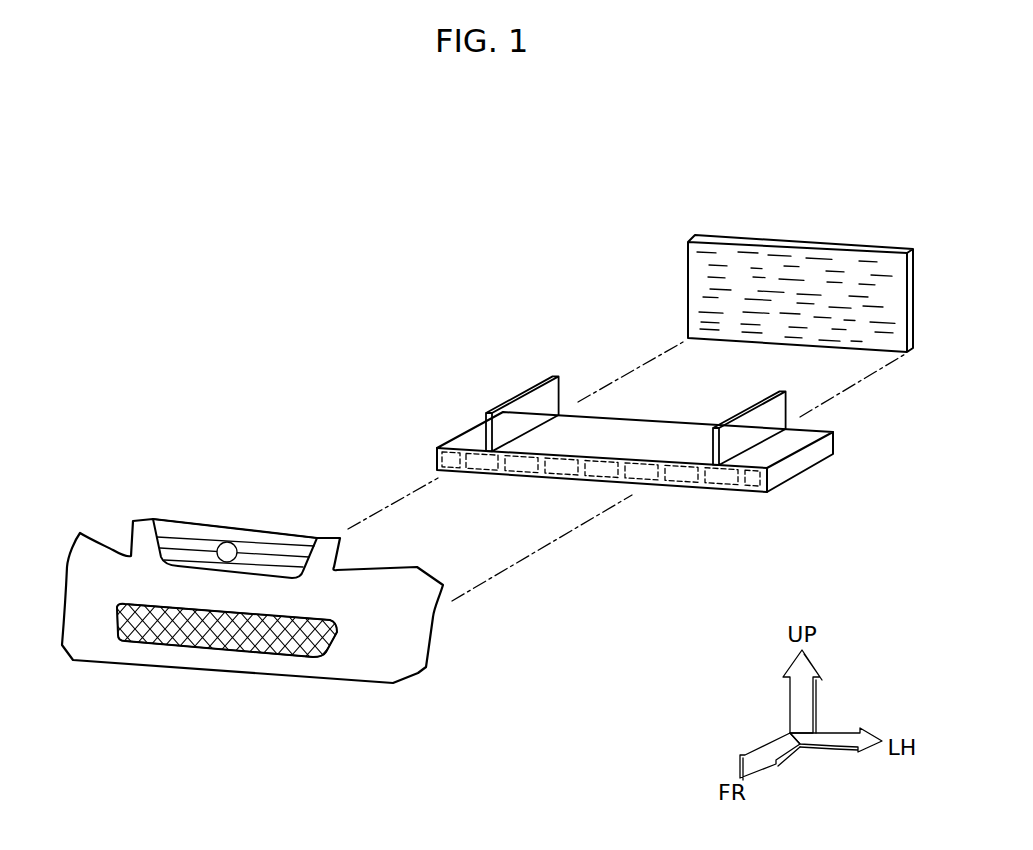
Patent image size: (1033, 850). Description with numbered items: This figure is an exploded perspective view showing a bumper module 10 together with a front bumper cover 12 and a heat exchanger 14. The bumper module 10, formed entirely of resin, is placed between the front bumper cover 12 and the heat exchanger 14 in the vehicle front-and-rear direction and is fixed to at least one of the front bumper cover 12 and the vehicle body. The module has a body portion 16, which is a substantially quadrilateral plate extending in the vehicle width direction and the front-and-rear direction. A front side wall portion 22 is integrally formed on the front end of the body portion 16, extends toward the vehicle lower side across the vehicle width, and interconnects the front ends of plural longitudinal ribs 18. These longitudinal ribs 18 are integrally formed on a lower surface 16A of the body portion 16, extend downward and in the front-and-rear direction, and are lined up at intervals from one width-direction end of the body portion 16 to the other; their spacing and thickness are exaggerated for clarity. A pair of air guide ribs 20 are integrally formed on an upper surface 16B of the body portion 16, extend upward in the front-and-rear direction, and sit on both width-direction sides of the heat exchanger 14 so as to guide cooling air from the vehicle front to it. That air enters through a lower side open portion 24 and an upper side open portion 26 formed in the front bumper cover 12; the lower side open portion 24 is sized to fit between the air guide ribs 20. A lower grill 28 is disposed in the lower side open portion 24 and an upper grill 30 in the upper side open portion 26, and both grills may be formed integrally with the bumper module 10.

The bumper module 10 is at (452, 432).
The front bumper cover 12 is at (85, 667).
The heat exchanger 14 is at (688, 282).
The body portion 16 is at (635, 455).
The lower surface 16A is at (673, 487).
The upper surface 16B is at (604, 428).
The longitudinal ribs 18 is at (728, 487).
The air guide ribs 20 is at (518, 388).
The front side wall portion 22 is at (602, 475).
The lower side open portion 24 is at (242, 657).
The upper side open portion 26 is at (303, 540).
The lower grill 28 is at (193, 647).
The upper grill 30 is at (197, 535).